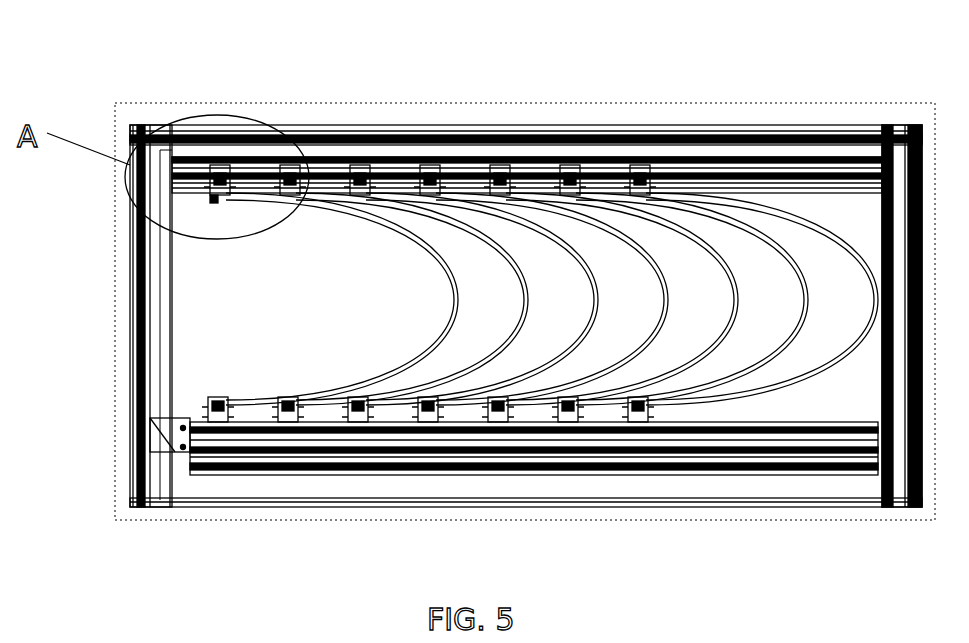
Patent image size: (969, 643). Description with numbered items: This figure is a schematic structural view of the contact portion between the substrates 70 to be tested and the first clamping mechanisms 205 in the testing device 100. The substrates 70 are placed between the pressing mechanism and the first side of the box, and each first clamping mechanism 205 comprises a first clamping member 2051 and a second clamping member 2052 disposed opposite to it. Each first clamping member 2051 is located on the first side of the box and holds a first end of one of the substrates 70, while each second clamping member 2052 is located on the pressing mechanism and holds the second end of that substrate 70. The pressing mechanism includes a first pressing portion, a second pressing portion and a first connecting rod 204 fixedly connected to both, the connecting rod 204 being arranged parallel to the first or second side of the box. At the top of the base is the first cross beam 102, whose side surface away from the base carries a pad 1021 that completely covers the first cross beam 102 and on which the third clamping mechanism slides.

The testing device 100 is at (200, 100).
The first cross beam 102 is at (140, 325).
The pad 1021 is at (160, 265).
The first clamping mechanism 205 is at (640, 45).
The first clamping member 2051 is at (300, 170).
The second clamping member 2052 is at (222, 540).
The first connecting rod 204 is at (563, 430).
The substrate to be tested 70 is at (458, 240).